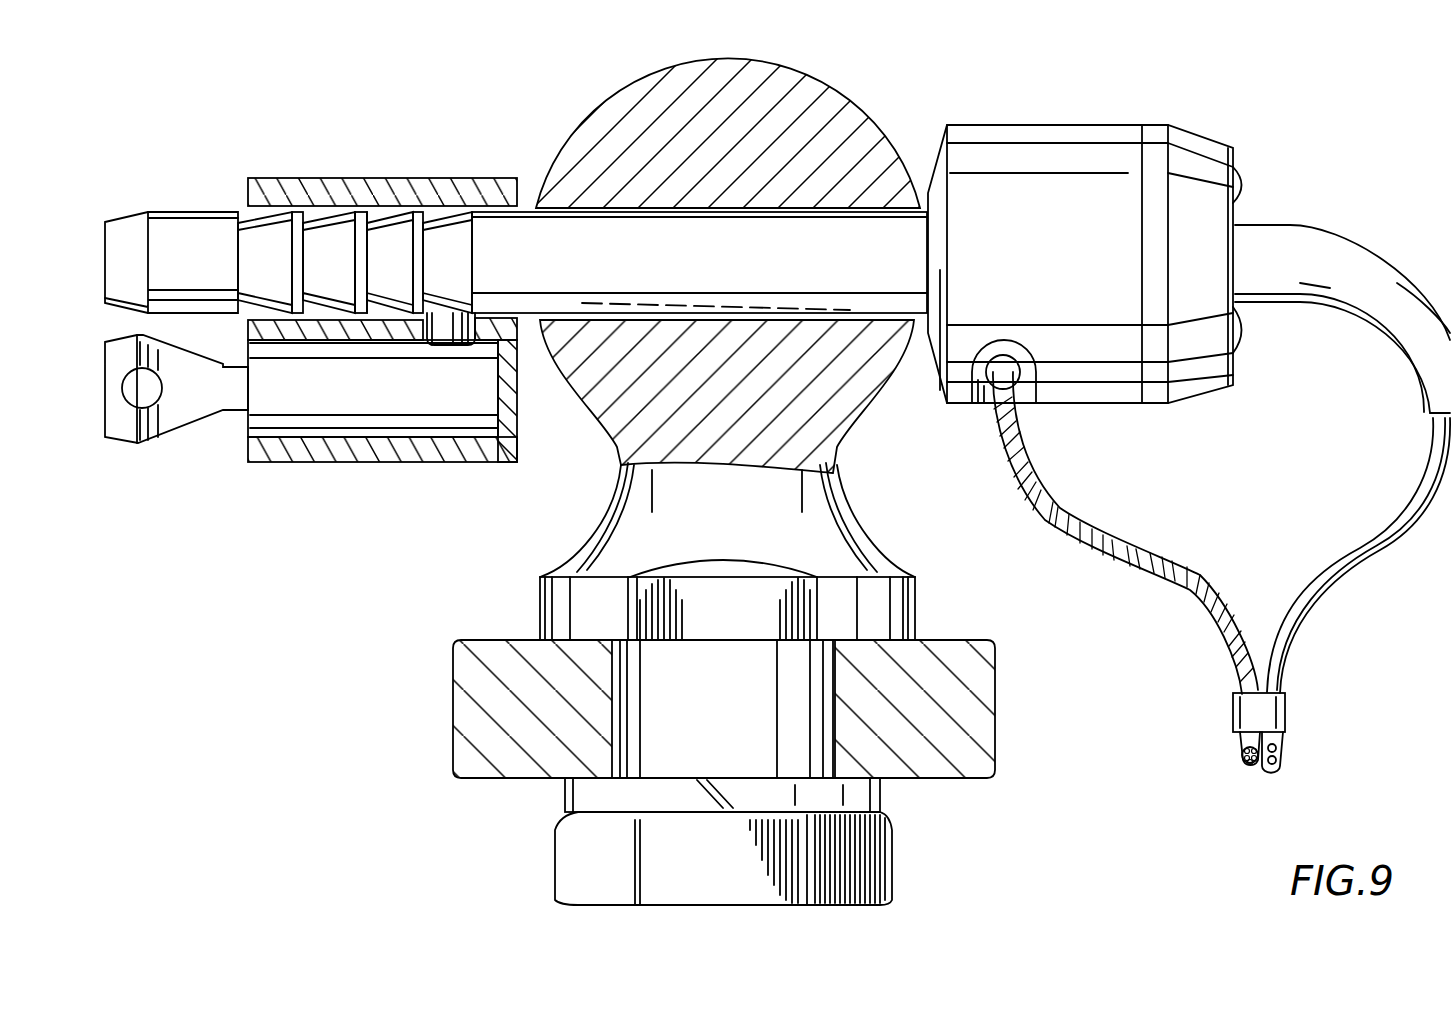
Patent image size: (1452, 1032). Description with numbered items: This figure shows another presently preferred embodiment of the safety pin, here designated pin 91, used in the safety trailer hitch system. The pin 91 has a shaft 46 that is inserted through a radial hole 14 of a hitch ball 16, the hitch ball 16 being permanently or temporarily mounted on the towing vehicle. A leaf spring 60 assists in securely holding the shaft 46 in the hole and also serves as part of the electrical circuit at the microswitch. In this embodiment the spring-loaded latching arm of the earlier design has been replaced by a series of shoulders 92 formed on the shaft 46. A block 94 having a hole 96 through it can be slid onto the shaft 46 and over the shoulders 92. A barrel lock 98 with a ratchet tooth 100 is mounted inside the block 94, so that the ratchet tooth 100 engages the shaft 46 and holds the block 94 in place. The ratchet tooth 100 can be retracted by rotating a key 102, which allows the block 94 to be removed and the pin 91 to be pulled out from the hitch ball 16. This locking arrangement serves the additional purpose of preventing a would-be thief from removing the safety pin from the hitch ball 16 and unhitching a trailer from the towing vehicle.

The radial hole 14 is at (697, 212).
The hitch ball 16 is at (843, 118).
The shaft 46 is at (580, 232).
The leaf spring 60 is at (683, 305).
The pin 91 is at (1150, 101).
The shoulders 92 is at (375, 240).
The block 94 is at (441, 190).
The hole 96 is at (395, 210).
The barrel lock 98 is at (363, 405).
The ratchet tooth 100 is at (445, 322).
The key 102 is at (183, 410).